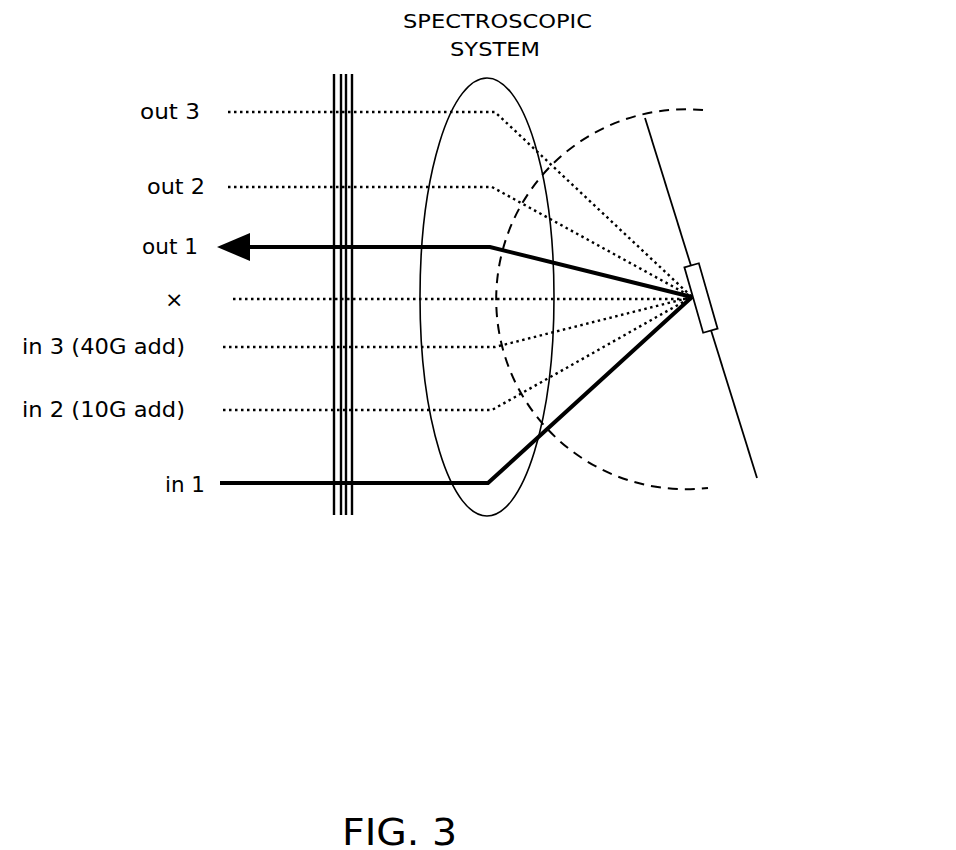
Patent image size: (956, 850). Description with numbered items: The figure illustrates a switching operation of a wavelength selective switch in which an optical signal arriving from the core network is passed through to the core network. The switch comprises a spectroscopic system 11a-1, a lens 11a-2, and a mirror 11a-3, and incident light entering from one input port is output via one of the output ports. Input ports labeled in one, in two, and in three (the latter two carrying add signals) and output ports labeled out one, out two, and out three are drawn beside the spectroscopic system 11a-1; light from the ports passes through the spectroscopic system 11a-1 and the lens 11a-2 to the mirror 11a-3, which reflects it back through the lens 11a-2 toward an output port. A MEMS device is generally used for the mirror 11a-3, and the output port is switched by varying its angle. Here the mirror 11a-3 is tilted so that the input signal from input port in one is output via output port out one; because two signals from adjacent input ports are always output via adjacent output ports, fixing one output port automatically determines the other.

The spectroscopic system 11a-1 is at (367, 47).
The lens 11a-2 is at (552, 92).
The mirror 11a-3 is at (708, 271).